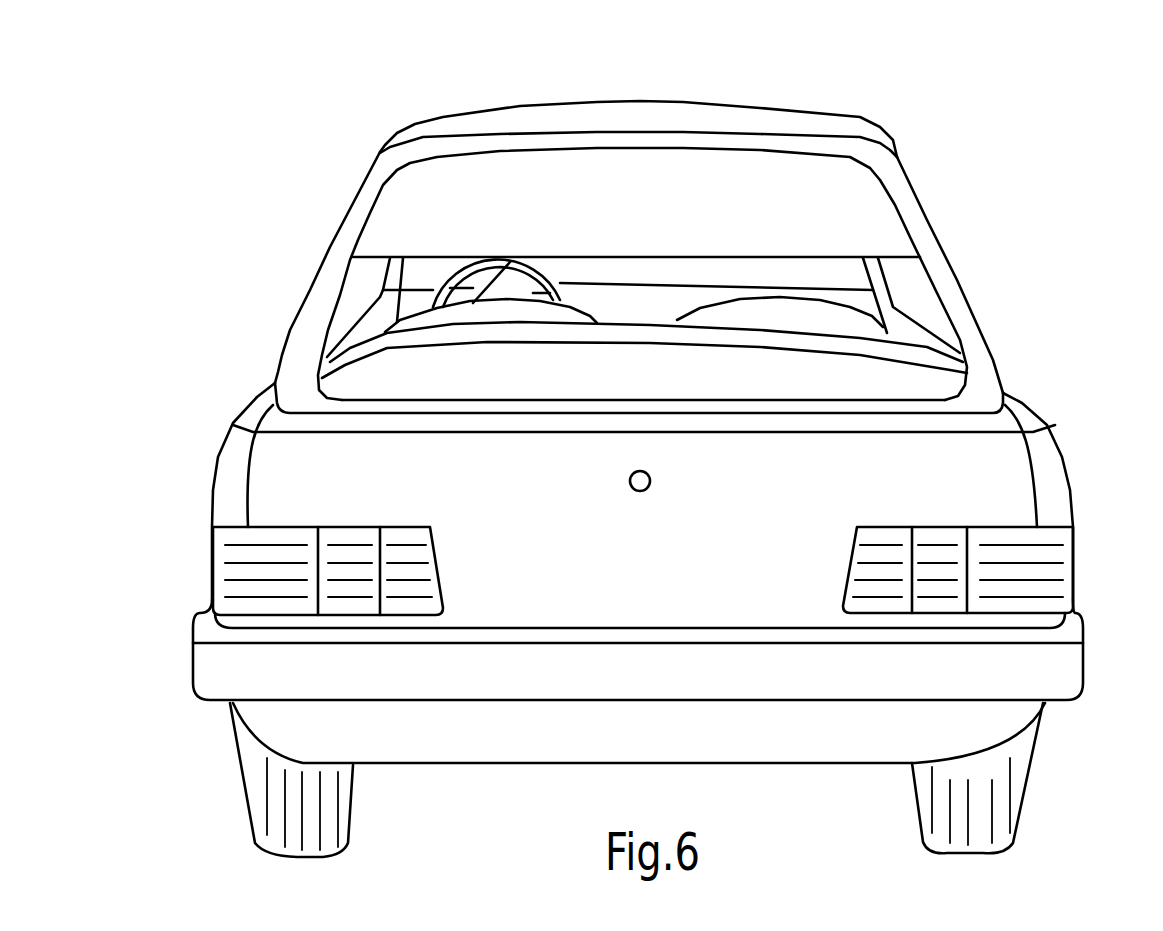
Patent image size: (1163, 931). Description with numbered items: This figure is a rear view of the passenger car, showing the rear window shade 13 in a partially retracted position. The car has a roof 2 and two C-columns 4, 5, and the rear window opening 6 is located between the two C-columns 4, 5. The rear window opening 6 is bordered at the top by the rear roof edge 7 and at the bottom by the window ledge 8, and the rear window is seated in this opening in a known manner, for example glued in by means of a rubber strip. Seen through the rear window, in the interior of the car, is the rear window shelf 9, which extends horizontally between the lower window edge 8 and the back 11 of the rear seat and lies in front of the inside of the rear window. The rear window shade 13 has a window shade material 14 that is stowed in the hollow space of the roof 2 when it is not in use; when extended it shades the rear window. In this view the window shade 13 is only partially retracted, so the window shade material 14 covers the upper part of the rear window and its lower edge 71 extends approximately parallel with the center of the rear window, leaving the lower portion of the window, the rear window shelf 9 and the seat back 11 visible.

The roof 2 is at (670, 117).
The C-column 4 is at (327, 281).
The C-column 5 is at (925, 228).
The rear window opening 6 is at (949, 303).
The rear roof edge 7 is at (717, 152).
The window ledge 8 is at (830, 398).
The rear window shelf 9 is at (450, 373).
The back of a rear seat 11 is at (635, 333).
The rear window shade 13 is at (1003, 270).
The window shade material 14 is at (600, 215).
The lower edge 71 is at (715, 255).